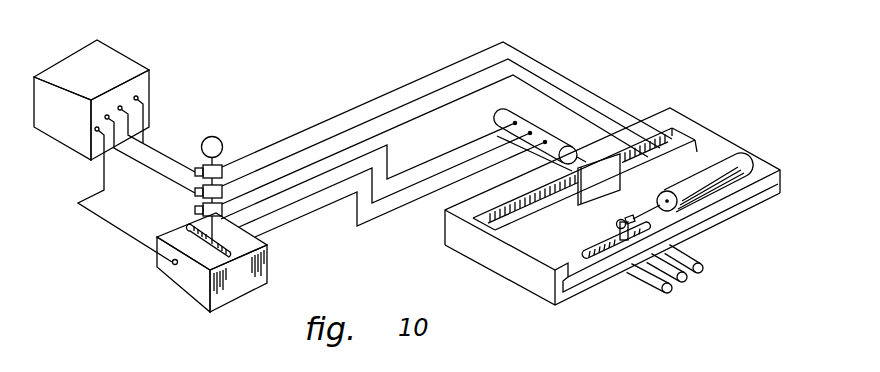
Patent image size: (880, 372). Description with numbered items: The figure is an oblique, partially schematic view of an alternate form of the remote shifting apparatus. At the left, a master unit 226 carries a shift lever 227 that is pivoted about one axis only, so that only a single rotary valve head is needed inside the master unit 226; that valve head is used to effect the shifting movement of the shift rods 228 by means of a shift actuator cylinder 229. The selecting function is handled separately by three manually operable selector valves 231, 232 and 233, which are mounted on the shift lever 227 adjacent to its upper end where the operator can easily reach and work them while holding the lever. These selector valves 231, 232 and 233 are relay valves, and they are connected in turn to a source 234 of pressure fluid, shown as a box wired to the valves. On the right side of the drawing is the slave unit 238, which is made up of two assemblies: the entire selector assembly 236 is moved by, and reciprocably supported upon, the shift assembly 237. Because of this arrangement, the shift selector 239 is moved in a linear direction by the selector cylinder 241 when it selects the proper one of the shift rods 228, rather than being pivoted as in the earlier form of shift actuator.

The master unit 226 is at (185, 307).
The shift lever 227 is at (219, 138).
The shift rods 228 is at (663, 288).
The shift actuator cylinder 229 is at (510, 113).
The selector valve 231 is at (198, 211).
The selector valve 232 is at (198, 192).
The selector valve 233 is at (198, 168).
The source of pressure fluid 234 is at (135, 68).
The selector assembly 236 is at (725, 231).
The shift assembly 237 is at (593, 193).
The slave unit 238 is at (715, 122).
The shift selector 239 is at (619, 220).
The selector cylinder 241 is at (702, 193).